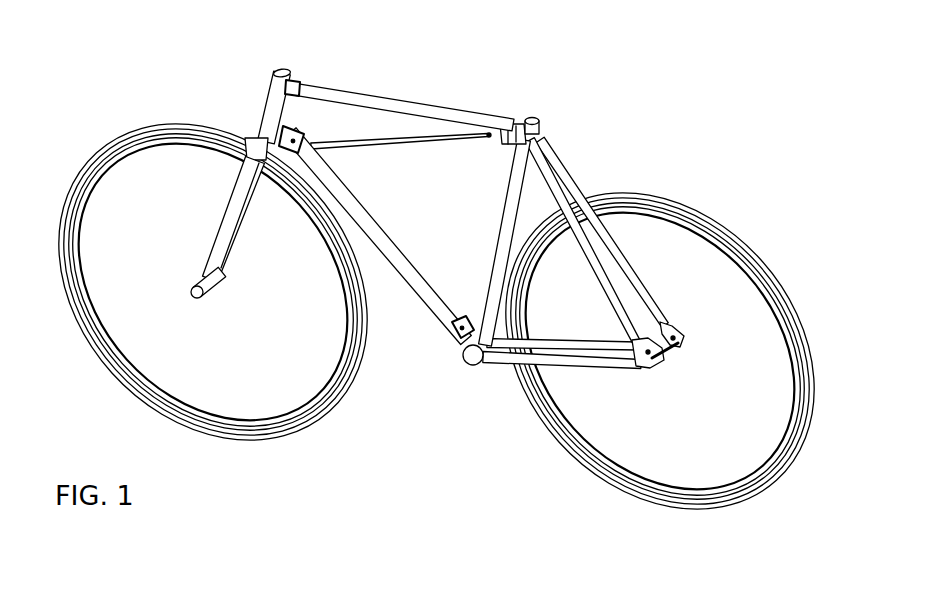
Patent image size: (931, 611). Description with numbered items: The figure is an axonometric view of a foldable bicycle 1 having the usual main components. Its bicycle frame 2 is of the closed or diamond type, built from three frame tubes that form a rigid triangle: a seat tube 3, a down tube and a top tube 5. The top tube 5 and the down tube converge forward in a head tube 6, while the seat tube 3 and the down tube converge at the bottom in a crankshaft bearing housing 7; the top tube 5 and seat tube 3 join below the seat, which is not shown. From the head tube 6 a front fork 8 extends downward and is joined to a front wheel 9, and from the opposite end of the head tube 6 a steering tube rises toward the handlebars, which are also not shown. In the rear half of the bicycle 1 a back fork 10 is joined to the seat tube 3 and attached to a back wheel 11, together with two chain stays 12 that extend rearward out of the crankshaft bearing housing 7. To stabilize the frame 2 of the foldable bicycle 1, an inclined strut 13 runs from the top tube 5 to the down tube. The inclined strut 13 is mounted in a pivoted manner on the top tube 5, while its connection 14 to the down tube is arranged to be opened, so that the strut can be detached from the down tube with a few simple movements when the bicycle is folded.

The bicycle 1 is at (656, 115).
The bicycle frame 2 is at (434, 226).
The seat tube 3 is at (505, 232).
The top tube 5 is at (377, 98).
The head tube 6 is at (270, 106).
The crankshaft bearing housing 7 is at (470, 365).
The front fork 8 is at (228, 226).
The front wheel 9 is at (242, 438).
The back fork 10 is at (640, 287).
The back wheel 11 is at (678, 508).
The chain stays 12 is at (588, 367).
The inclined strut 13 is at (428, 146).
The connection 14 is at (312, 152).